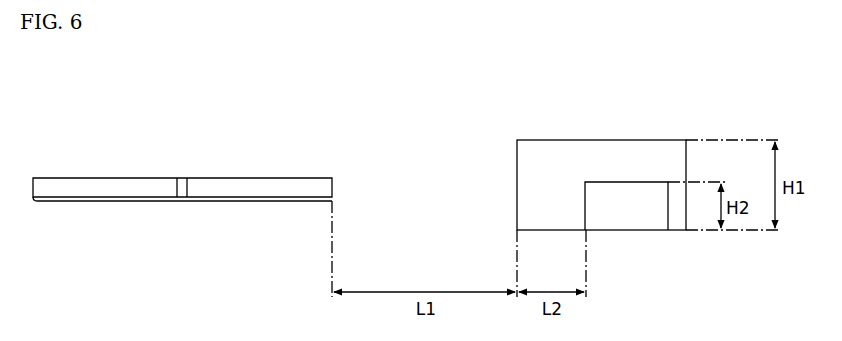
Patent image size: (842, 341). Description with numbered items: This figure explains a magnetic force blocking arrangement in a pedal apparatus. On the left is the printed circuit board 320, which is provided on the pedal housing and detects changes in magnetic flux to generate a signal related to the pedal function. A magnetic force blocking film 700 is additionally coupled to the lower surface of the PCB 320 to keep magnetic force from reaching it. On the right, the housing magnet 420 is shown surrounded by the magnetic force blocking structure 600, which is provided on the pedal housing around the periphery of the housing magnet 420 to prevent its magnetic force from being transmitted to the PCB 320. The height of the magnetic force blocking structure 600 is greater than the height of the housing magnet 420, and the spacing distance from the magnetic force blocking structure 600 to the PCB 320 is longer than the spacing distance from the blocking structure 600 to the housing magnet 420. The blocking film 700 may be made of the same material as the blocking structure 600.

The printed circuit board 320 is at (158, 187).
The magnetic force blocking film 700 is at (182, 197).
The magnetic force blocking structure 600 is at (553, 160).
The housing magnet 420 is at (624, 205).